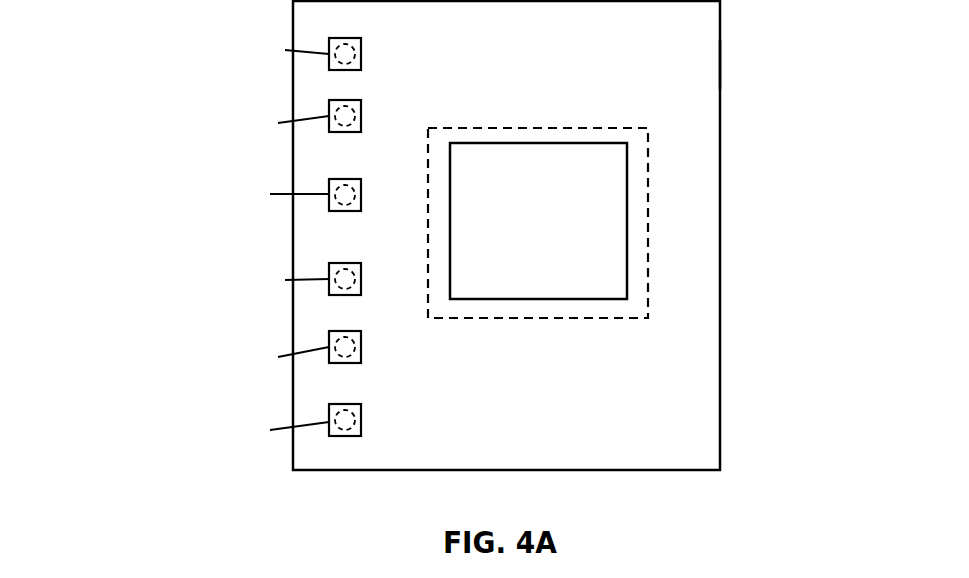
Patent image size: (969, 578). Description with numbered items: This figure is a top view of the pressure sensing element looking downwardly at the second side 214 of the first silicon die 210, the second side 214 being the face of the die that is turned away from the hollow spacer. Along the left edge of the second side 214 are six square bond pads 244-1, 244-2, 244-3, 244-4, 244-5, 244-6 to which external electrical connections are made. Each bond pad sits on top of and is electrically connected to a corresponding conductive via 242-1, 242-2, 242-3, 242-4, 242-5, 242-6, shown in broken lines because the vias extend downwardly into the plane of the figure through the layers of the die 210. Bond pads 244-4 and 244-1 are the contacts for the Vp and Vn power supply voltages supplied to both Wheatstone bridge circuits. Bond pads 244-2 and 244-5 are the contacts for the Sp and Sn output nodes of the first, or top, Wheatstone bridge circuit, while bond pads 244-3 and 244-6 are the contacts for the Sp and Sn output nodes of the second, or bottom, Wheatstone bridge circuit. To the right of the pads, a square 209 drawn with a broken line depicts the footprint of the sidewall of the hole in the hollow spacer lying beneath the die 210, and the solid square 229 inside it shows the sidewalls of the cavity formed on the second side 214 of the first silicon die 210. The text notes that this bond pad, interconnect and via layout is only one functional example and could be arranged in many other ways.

The first silicon die 210 is at (720, 102).
The second side 214 is at (705, 69).
The square (footprint of the hole sidewall) 209 is at (649, 254).
The square (cavity sidewalls) 229 is at (610, 300).
The conductive via 242-1 is at (363, 46).
The conductive via 242-2 is at (363, 108).
The conductive via 242-3 is at (380, 172).
The conductive via 242-4 is at (380, 257).
The conductive via 242-5 is at (362, 353).
The conductive via 242-6 is at (362, 427).
The bond pad 244-1 is at (248, 46).
The bond pad 244-2 is at (166, 100).
The bond pad 244-3 is at (139, 184).
The bond pad 244-4 is at (249, 277).
The bond pad 244-5 is at (166, 335).
The bond pad 244-6 is at (139, 420).